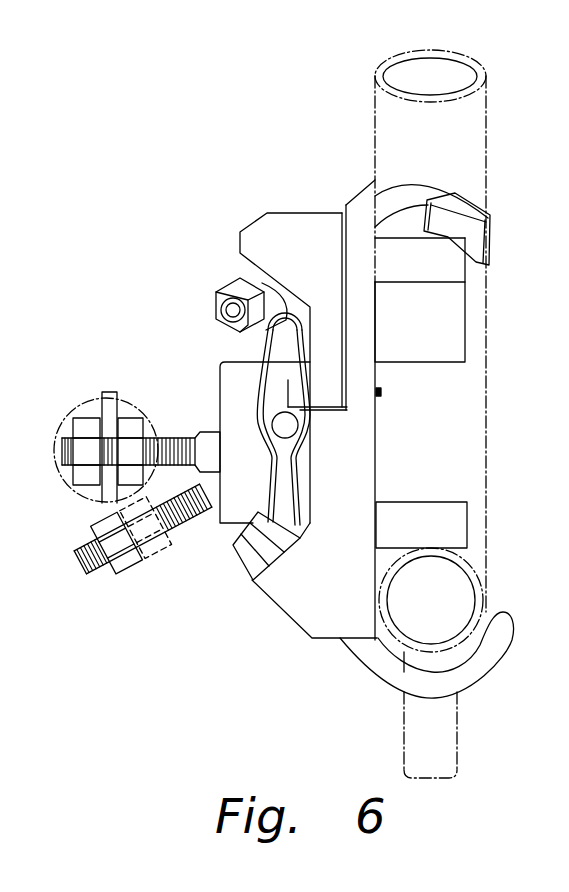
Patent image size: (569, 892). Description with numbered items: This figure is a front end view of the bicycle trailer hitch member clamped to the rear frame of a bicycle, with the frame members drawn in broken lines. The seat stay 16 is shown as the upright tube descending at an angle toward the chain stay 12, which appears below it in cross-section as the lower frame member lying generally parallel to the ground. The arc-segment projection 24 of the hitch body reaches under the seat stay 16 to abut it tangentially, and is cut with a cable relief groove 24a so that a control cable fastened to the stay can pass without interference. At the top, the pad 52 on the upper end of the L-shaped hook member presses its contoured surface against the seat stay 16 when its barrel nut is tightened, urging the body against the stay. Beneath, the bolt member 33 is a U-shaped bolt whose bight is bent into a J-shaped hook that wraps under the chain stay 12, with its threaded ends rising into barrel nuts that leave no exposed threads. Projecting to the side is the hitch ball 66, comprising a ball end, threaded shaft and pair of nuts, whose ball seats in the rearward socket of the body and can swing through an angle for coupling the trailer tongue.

The seat stay 16 is at (500, 120).
The pad 52 is at (467, 205).
The second projection 24 is at (465, 329).
The cable relief groove 24a is at (427, 500).
The chain stay 12 is at (497, 595).
The bolt member 33 is at (487, 666).
The hitch ball 66 is at (204, 420).